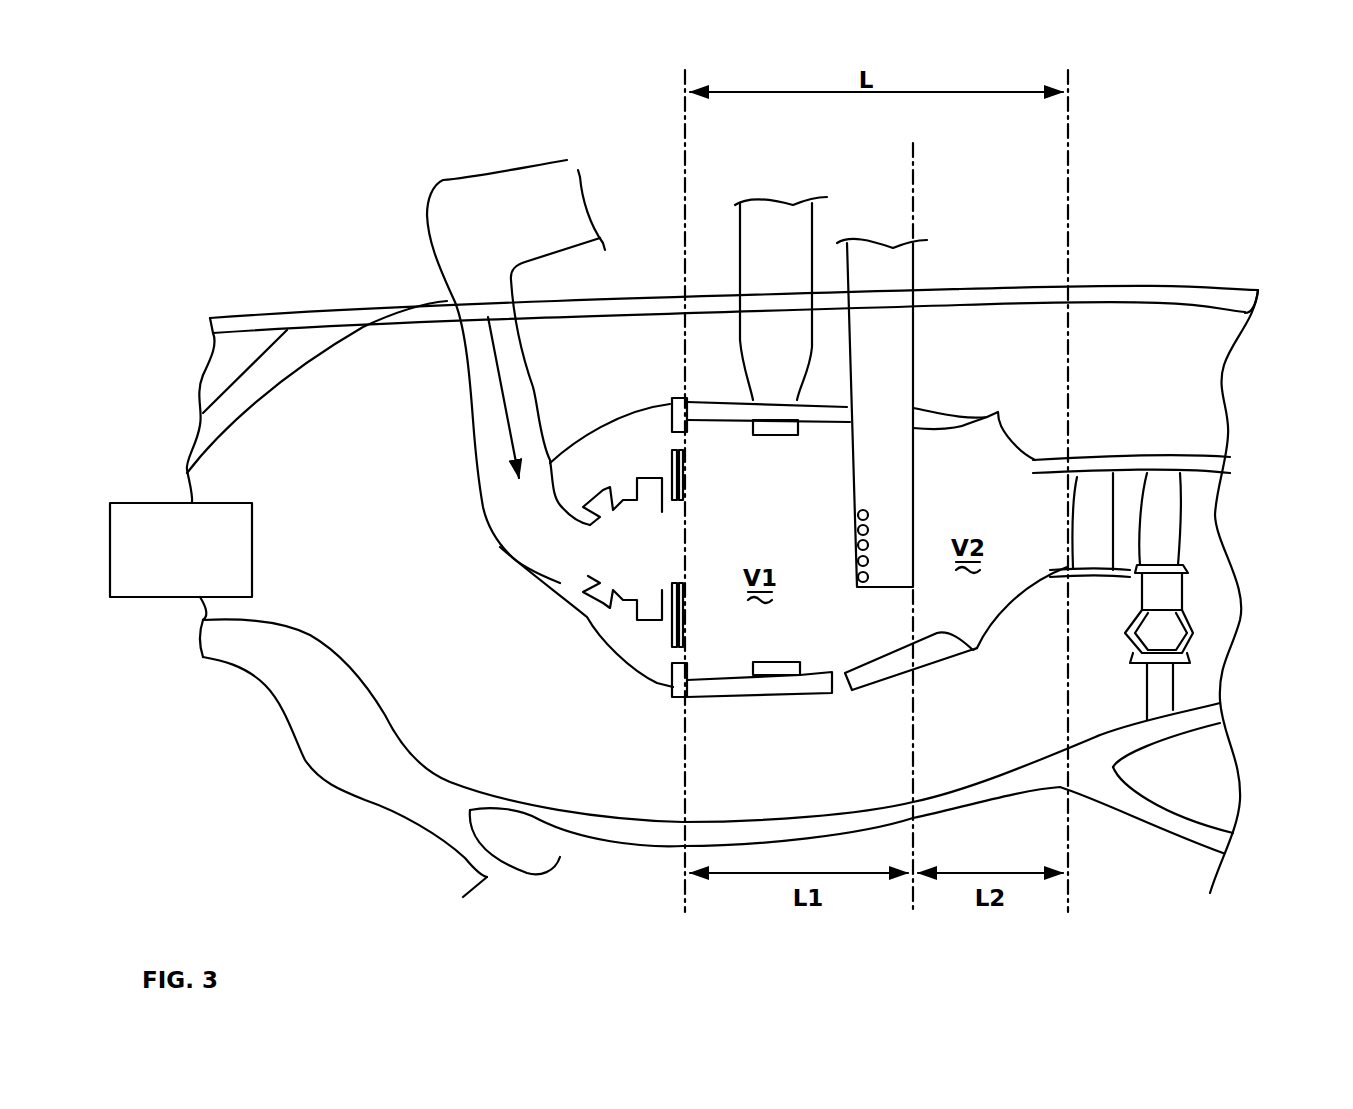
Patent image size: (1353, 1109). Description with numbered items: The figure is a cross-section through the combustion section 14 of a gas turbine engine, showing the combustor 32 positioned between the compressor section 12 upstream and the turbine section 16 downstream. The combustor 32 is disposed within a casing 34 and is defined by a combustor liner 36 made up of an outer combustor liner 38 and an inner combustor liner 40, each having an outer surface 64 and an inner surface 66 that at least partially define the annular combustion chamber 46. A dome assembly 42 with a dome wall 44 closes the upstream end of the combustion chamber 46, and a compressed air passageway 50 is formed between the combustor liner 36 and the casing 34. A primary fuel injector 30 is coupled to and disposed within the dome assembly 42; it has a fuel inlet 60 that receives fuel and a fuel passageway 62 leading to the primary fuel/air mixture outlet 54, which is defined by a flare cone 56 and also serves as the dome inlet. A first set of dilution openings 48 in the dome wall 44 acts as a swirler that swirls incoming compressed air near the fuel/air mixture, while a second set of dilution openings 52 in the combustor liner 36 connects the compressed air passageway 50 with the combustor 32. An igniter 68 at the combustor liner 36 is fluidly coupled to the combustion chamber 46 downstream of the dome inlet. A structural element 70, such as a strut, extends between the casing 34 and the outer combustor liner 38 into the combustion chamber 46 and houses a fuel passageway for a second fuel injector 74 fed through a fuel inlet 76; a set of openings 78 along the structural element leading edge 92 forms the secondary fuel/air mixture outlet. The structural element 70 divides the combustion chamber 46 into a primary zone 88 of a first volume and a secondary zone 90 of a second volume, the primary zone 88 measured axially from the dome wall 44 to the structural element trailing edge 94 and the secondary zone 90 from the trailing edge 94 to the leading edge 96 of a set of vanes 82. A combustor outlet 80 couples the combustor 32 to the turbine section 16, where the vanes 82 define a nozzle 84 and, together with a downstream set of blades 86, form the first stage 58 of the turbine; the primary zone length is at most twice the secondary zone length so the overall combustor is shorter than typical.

The compressor section 12 is at (160, 562).
The combustion section 14 is at (300, 170).
The turbine section 16 is at (1203, 517).
The primary fuel injector 30 is at (588, 557).
The combustor 32 is at (983, 378).
The casing 34 is at (1105, 302).
The combustor liner 36 is at (953, 663).
The outer combustor liner 38 is at (933, 407).
The inner combustor liner 40 is at (893, 673).
The dome assembly 42 is at (585, 647).
The dome wall 44 is at (670, 630).
The combustion chamber 46 is at (864, 663).
The first set of dilution openings 48 is at (660, 430).
The compressed air passageway 50 is at (748, 764).
The second set of dilution openings 52 is at (829, 698).
The primary fuel/air mixture outlet 54 is at (667, 537).
The flare cone 56 is at (686, 492).
The first stage 58 is at (1183, 453).
The fuel inlet 60 is at (504, 203).
The fuel passageway 62 is at (520, 377).
The outer surface 64 is at (970, 420).
The inner surface 66 is at (957, 427).
The igniter 68 is at (773, 350).
The structural element 70 is at (903, 328).
The second fuel injector 74 is at (852, 415).
The fuel inlet 76 is at (893, 240).
The set of openings 78 is at (857, 548).
The combustor outlet 80 is at (1047, 537).
The set of vanes 82 is at (1078, 545).
The nozzle 84 is at (1118, 492).
The set of blades 86 is at (1146, 545).
The primary zone 88 is at (668, 369).
The secondary zone 90 is at (1037, 519).
The structural element leading edge 92 is at (857, 527).
The structural element trailing edge 94 is at (913, 492).
The leading edge 96 is at (1077, 478).